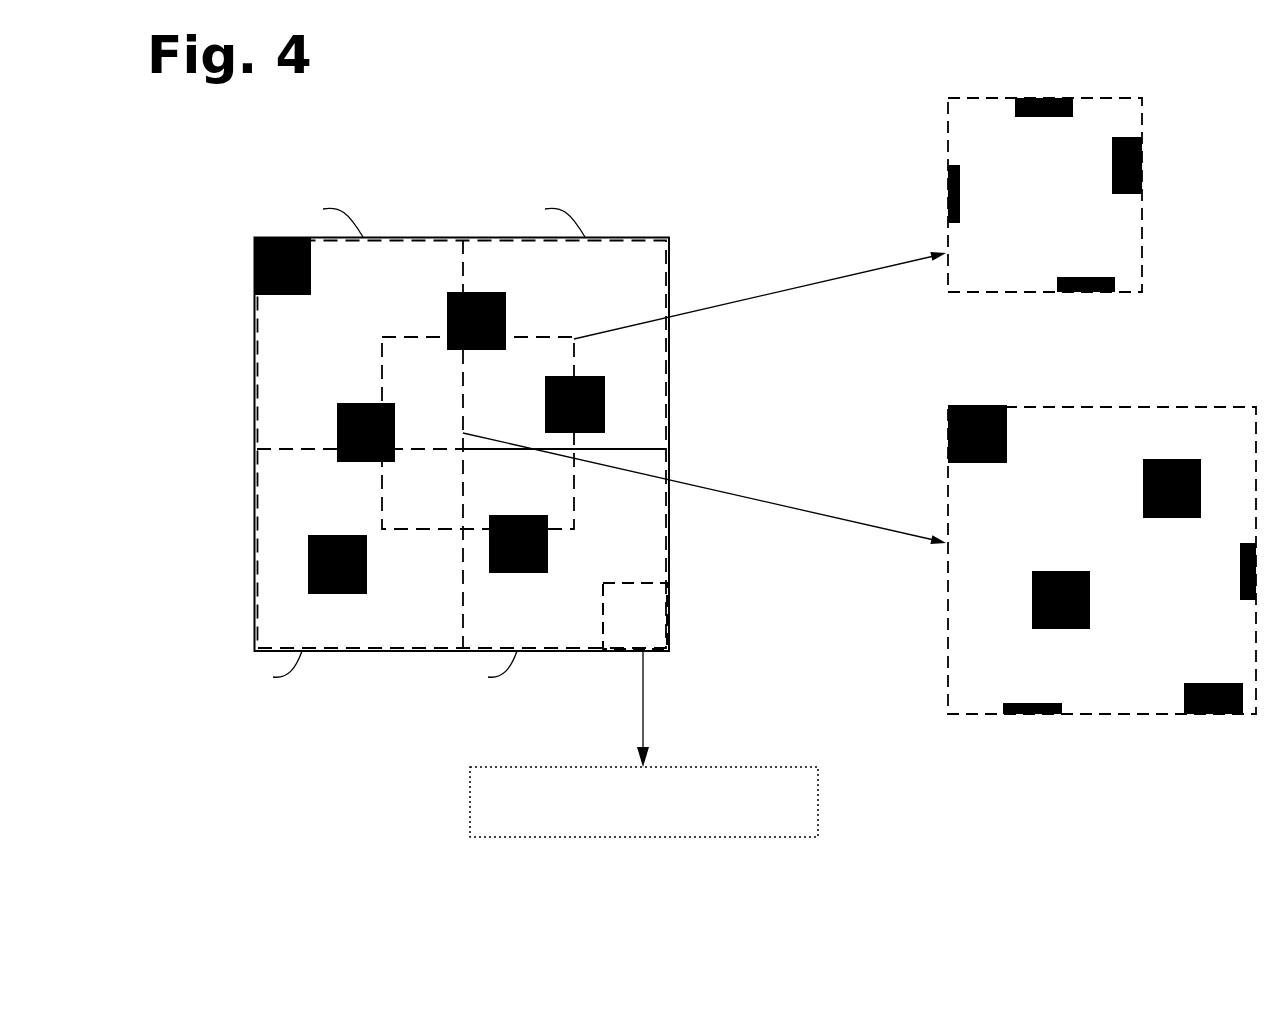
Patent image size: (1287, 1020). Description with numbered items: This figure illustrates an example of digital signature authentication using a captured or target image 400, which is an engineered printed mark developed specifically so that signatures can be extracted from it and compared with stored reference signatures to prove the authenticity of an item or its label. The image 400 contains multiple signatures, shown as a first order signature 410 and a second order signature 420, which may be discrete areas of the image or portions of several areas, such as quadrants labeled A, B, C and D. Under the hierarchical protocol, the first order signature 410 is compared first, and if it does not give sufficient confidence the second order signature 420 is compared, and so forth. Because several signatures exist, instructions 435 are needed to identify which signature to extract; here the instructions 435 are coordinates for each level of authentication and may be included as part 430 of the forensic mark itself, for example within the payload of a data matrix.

The target image 400 is at (447, 202).
The first order signature 410 is at (1117, 98).
The second order signature 420 is at (1147, 407).
The part of the forensic mark 430 is at (603, 622).
The instructions 435 is at (740, 767).